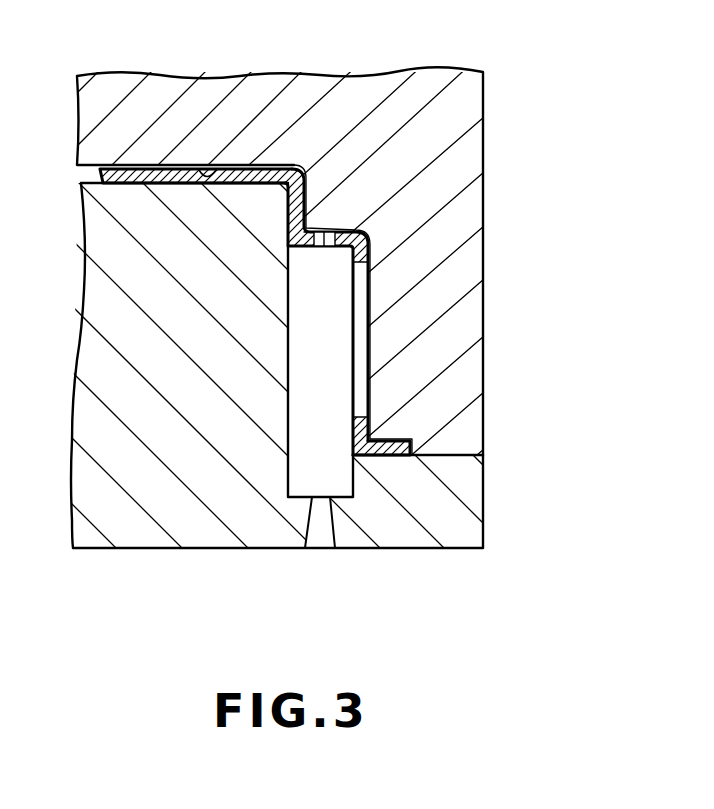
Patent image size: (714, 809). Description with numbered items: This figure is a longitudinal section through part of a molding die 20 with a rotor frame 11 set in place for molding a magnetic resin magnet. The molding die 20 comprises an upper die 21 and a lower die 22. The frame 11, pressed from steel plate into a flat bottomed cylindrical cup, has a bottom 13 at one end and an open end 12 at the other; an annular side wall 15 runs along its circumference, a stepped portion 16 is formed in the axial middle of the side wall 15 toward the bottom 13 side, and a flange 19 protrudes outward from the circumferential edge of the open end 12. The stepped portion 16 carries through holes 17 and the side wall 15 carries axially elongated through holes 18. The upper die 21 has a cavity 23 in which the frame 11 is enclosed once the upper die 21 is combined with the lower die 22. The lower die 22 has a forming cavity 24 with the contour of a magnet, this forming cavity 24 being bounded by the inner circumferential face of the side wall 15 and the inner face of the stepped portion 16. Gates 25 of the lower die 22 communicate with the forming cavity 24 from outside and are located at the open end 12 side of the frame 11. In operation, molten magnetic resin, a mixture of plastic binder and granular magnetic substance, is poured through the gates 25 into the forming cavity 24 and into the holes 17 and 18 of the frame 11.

The molding die 20 is at (328, 316).
The upper die 21 is at (467, 144).
The lower die 22 is at (468, 525).
The frame 11 is at (303, 236).
The bottom 13 is at (160, 169).
The cavity 23 is at (212, 170).
The stepped portion 16 is at (308, 228).
The through holes 17 is at (332, 230).
The annular side wall 15 is at (440, 261).
The through holes 18 is at (360, 352).
The flange 19 is at (445, 428).
The forming cavity 24 is at (300, 366).
The open end 12 is at (352, 452).
The gates 25 is at (318, 535).